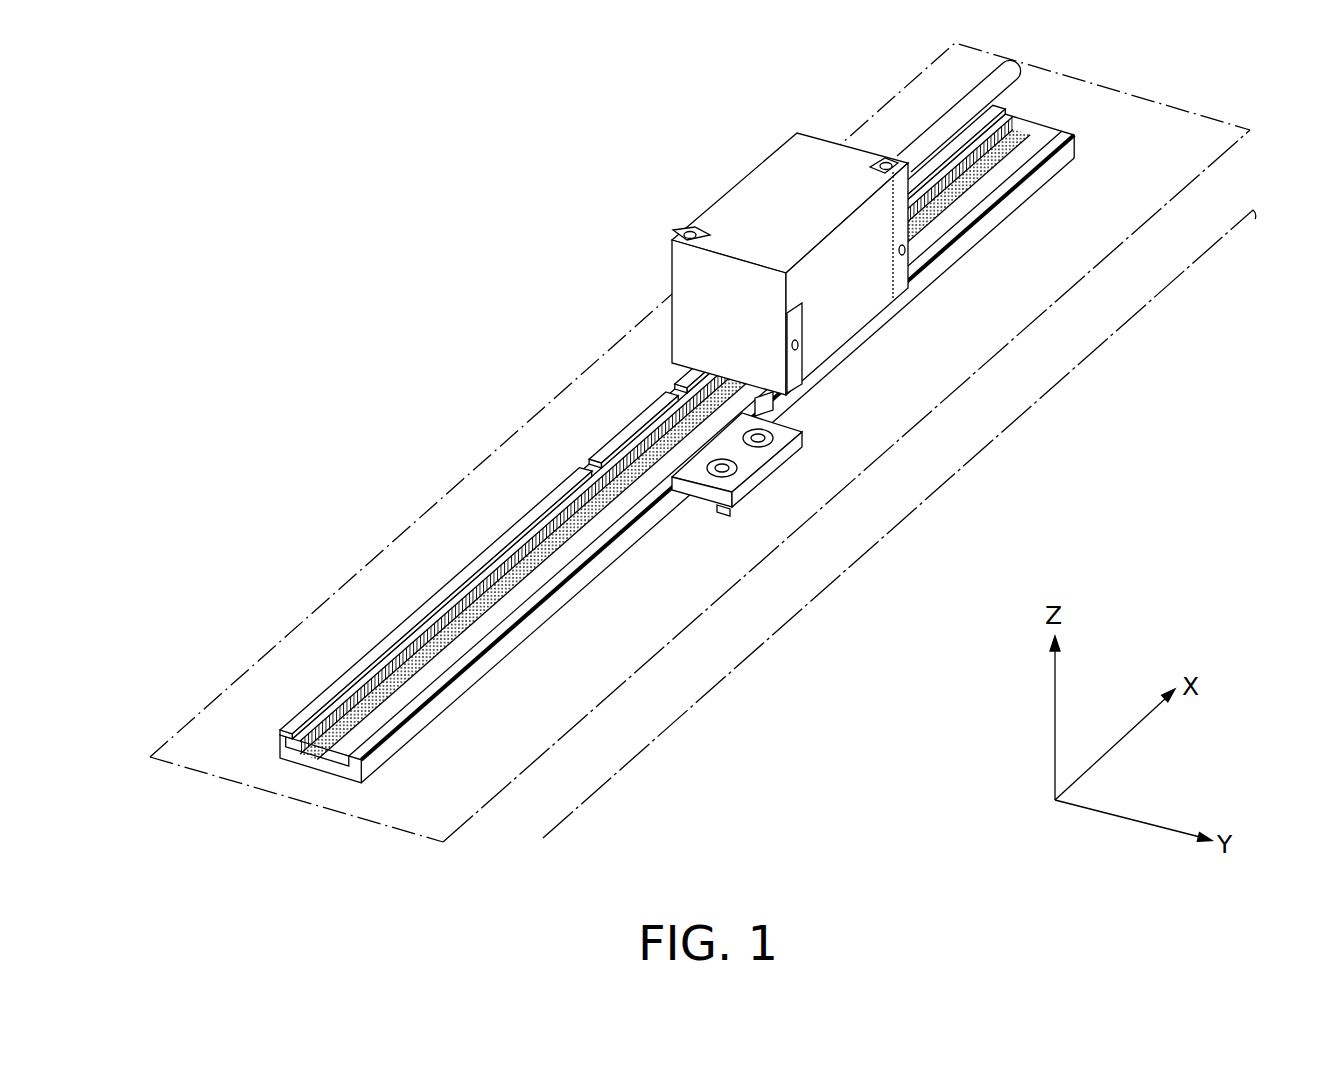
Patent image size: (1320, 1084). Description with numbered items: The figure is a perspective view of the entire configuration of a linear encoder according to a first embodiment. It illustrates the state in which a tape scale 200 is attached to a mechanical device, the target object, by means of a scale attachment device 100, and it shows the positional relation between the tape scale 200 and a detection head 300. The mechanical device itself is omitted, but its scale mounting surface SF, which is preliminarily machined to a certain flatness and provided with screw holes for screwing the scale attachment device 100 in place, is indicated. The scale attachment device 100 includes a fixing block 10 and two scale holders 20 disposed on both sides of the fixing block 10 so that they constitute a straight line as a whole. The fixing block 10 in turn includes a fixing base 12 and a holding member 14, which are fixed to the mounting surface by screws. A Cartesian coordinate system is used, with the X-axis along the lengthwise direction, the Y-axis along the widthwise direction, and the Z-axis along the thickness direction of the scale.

The fixing block 10 is at (790, 306).
The fixing base 12 is at (640, 420).
The holding member 14 is at (755, 480).
The scale holder 20 is at (990, 217).
The scale attachment device 100 is at (923, 510).
The tape scale 200 is at (520, 530).
The detection head 300 is at (834, 141).
The scale mounting surface SF is at (300, 622).